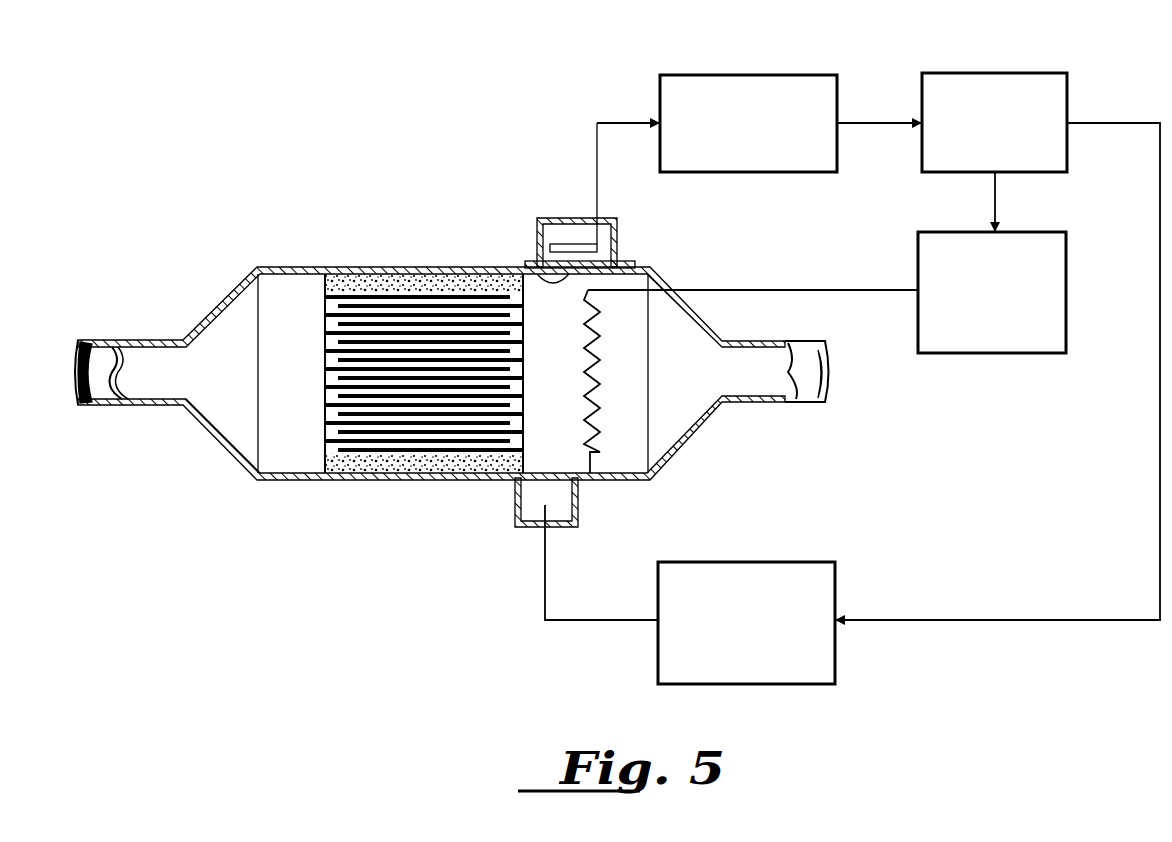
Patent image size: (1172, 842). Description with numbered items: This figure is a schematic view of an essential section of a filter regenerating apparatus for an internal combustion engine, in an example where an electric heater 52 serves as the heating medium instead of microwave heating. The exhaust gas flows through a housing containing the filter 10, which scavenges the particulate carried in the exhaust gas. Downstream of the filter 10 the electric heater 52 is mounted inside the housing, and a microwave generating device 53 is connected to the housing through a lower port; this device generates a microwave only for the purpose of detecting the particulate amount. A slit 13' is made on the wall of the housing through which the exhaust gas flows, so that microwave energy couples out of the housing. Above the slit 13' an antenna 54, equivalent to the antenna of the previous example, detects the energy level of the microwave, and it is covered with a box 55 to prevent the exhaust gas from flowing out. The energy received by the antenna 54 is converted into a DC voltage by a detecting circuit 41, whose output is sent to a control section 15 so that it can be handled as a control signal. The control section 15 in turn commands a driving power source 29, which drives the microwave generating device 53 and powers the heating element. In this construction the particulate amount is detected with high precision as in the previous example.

The filter 10 is at (395, 418).
The slit 13' is at (452, 343).
The control section 15 is at (990, 82).
The driving power source 29 is at (1055, 285).
The detecting circuit 41 is at (740, 82).
The electric heater 52 is at (596, 430).
The microwave generating device 53 is at (822, 592).
The antenna 54 is at (570, 242).
The box 55 is at (620, 236).